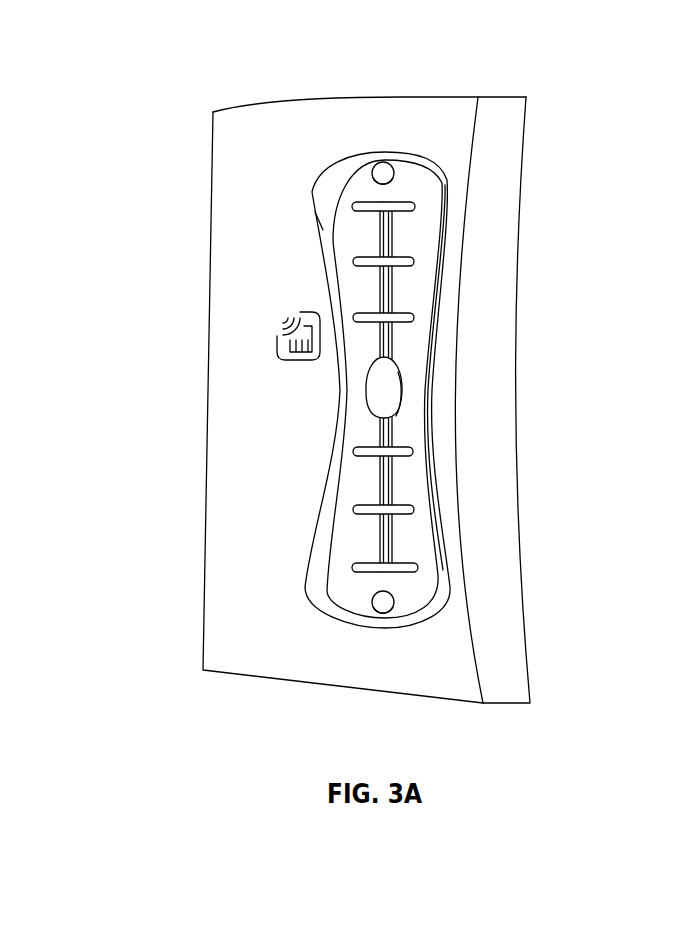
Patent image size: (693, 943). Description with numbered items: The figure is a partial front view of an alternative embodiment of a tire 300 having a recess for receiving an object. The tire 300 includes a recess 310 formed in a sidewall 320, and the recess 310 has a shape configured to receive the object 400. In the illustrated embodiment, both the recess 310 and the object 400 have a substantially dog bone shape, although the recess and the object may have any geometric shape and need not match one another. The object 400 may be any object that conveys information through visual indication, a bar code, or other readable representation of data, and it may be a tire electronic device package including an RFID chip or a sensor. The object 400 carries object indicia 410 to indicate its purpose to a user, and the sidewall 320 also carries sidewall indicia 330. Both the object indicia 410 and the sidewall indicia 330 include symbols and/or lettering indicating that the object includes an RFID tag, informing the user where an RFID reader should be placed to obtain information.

The tire 300 is at (192, 59).
The recess 310 is at (420, 177).
The sidewall 320 is at (308, 120).
The sidewall indicia 330 is at (248, 378).
The object 400 is at (399, 371).
The object indicia 410 is at (406, 252).